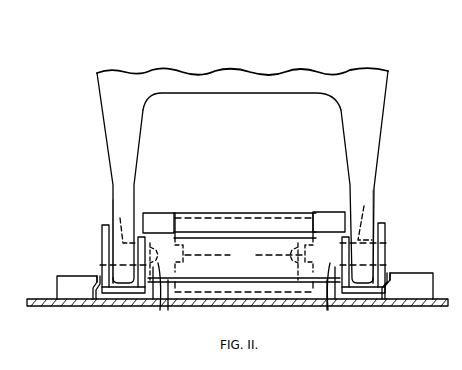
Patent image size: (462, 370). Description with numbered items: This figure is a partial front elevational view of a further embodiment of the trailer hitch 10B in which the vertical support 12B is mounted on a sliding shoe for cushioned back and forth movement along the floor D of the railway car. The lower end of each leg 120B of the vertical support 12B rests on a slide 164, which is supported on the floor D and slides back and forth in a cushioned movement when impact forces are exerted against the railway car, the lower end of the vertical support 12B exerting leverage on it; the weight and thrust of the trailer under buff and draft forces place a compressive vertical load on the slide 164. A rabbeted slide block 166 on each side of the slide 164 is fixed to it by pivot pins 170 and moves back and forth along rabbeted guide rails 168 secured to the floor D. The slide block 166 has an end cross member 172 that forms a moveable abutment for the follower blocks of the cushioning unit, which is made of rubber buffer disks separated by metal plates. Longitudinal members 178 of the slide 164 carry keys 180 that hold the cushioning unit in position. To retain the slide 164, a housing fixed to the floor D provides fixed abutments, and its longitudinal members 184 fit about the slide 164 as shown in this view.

The hitch 10B is at (308, 70).
The vertical support 12B is at (342, 118).
The leg 120B is at (112, 200).
The floor D is at (50, 308).
The slide 164 is at (282, 250).
The rabbeted slide block 166 is at (97, 295).
The rabbeted guide rail 168 is at (70, 275).
The pivot pin 170 is at (118, 217).
The end cross member 172 is at (223, 243).
The longitudinal member 178 is at (160, 270).
The key 180 is at (245, 258).
The longitudinal member 184 is at (150, 212).